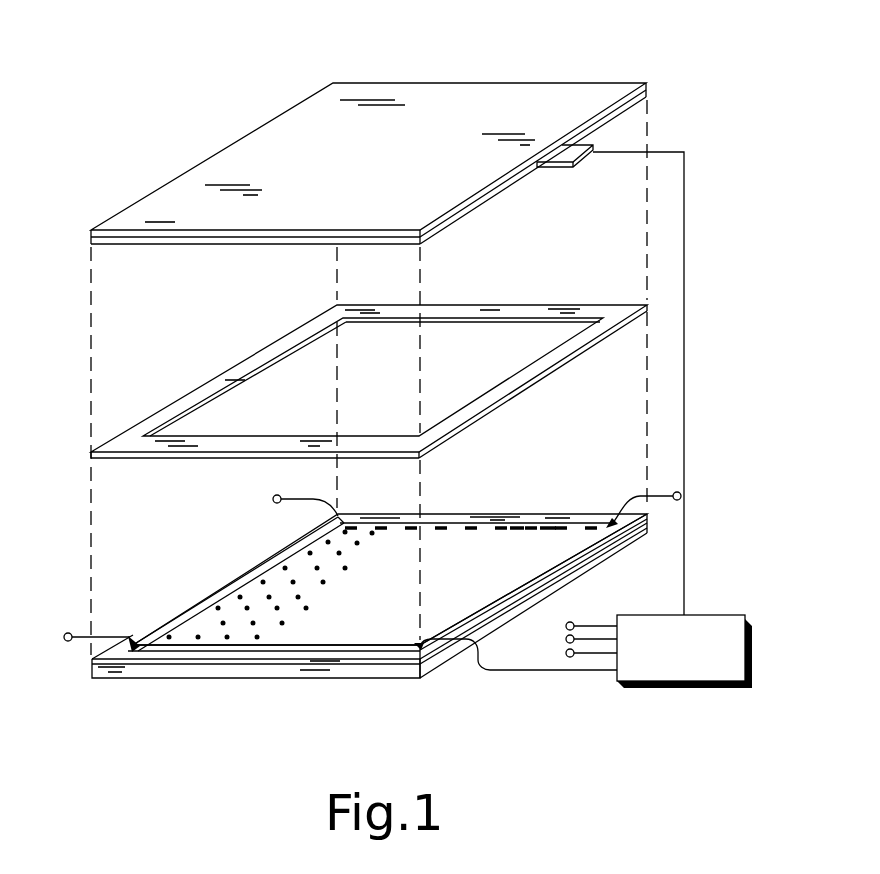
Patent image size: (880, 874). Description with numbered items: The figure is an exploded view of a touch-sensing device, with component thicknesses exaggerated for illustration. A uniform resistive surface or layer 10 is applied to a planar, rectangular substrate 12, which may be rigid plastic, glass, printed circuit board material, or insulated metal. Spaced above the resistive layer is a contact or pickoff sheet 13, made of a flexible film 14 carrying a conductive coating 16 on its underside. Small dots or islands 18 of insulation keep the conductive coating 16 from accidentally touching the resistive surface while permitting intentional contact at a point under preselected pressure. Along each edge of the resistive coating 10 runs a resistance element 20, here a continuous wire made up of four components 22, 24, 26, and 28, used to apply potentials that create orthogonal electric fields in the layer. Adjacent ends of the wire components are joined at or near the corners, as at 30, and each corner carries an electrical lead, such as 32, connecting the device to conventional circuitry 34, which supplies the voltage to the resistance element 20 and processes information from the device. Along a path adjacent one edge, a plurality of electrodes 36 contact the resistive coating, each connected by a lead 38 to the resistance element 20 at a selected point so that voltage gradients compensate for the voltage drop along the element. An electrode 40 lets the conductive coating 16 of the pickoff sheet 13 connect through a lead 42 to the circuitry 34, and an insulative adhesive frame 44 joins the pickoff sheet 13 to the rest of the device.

The contact or pickoff sheet 13 is at (612, 60).
The flexible film 14 is at (398, 167).
The conductive coating 16 is at (455, 213).
The electrode 40 is at (548, 167).
The lead 42 is at (687, 286).
The insulative adhesive frame 44 is at (518, 390).
The uniform resistive surface or layer 10 is at (473, 573).
The substrate 12 is at (215, 672).
The dots or islands of insulation 18 is at (192, 622).
The wire component 24 is at (250, 582).
The wire component 22 is at (440, 527).
The electrodes 36 is at (517, 526).
The lead 38 is at (537, 526).
The resistance element 20 is at (560, 508).
The wire component 26 is at (300, 652).
The wire component 28 is at (571, 549).
The corner joint of wire components 30 is at (422, 648).
The electrical lead 32 is at (548, 670).
The circuitry 34 is at (707, 613).